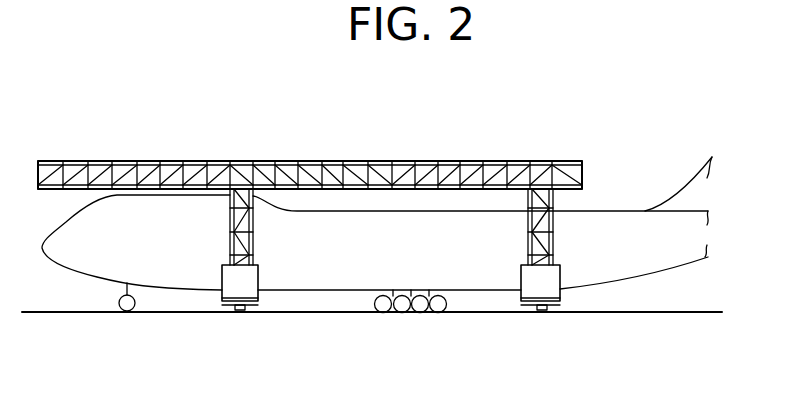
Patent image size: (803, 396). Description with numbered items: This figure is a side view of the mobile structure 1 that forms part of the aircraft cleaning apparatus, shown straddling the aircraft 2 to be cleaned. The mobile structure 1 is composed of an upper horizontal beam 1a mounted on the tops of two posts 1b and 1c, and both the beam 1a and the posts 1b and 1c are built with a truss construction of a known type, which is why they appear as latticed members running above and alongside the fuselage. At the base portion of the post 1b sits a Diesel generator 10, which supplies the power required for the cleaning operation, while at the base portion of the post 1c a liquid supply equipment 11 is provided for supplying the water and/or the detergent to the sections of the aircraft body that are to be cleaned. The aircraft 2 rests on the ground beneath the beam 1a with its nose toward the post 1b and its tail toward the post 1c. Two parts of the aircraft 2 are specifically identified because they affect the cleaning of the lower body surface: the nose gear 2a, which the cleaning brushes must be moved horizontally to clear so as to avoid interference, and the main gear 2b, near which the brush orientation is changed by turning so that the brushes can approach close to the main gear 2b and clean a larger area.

The mobile structure 1 is at (440, 163).
The upper horizontal beam 1a is at (312, 161).
The post 1b is at (229, 243).
The post 1c is at (527, 245).
The Diesel generator 10 is at (250, 279).
The liquid supply equipment 11 is at (561, 293).
The aircraft 2 is at (66, 266).
The nose gear 2a is at (120, 291).
The main gear 2b is at (375, 300).